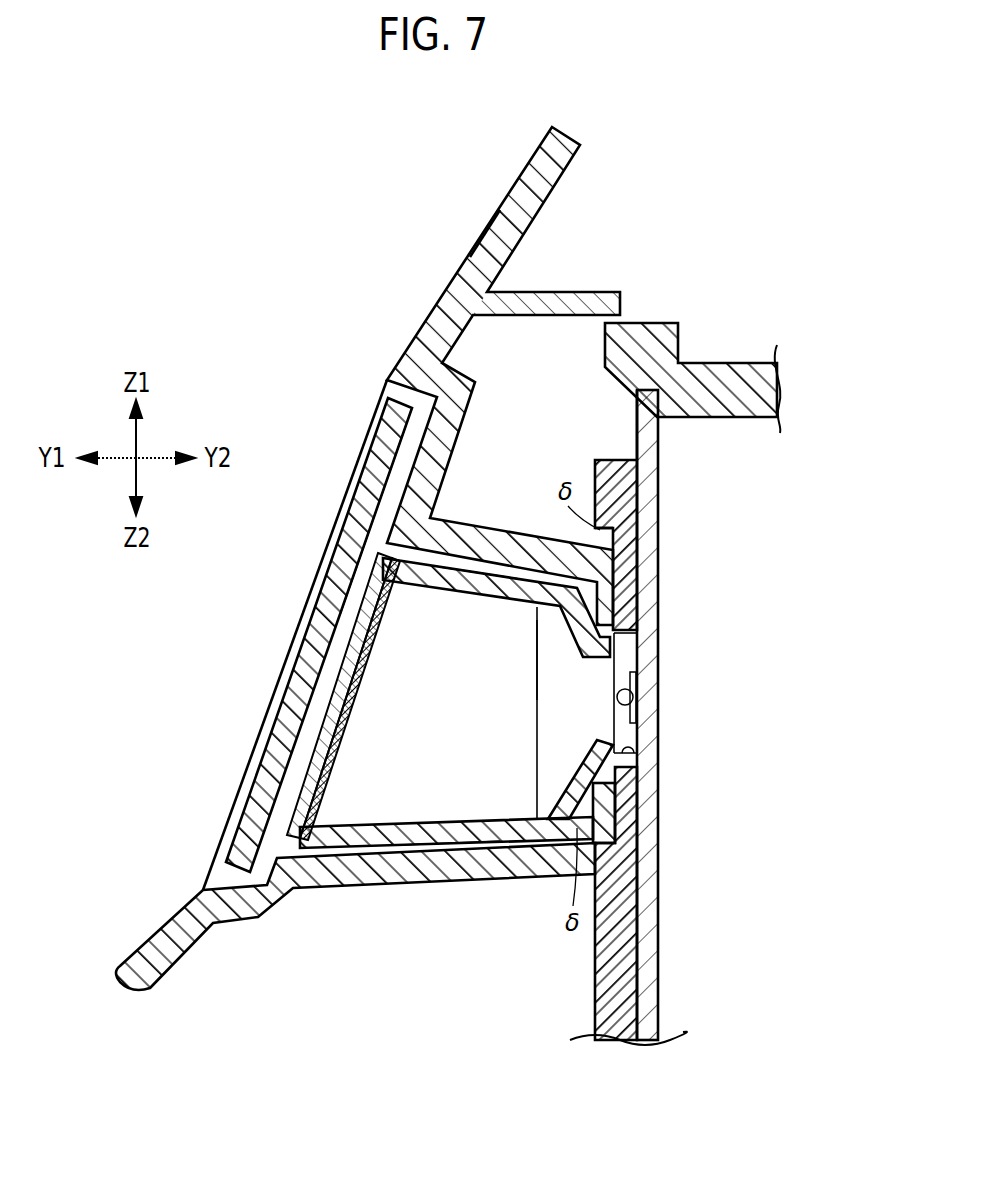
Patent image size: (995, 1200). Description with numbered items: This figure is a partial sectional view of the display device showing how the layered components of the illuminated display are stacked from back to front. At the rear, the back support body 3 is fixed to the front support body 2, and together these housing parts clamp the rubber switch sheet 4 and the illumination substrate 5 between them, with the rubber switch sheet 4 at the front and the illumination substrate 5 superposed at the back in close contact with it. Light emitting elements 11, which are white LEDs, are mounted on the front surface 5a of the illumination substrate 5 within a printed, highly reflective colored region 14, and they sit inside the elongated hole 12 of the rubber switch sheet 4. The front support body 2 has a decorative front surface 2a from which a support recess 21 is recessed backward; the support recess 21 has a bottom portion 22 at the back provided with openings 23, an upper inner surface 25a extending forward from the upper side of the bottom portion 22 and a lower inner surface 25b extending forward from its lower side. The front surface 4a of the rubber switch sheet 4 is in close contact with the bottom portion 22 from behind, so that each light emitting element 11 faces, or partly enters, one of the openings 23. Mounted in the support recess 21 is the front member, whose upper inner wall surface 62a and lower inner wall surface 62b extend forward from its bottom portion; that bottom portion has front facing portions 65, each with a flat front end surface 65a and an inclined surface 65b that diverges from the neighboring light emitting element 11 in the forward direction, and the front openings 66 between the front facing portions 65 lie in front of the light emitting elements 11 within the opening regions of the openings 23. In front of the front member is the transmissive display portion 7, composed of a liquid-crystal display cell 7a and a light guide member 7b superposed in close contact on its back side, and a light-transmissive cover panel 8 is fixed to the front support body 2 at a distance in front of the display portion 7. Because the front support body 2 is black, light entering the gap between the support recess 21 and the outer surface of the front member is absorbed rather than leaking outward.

The front support body 2 is at (572, 150).
The front surface 2a is at (477, 240).
The back support body 3 is at (727, 377).
The rubber switch sheet 4 is at (622, 498).
The front surface 4a is at (615, 532).
The illumination substrate 5 is at (647, 980).
The front surface 5a is at (632, 432).
The display portion 7 is at (365, 785).
The liquid-crystal display cell 7a is at (282, 850).
The light guide member 7b is at (340, 785).
The cover panel 8 is at (257, 773).
The light emitting elements 11 is at (633, 705).
The elongated hole 12 is at (630, 630).
The colored region 14 is at (625, 748).
The support recess 21 is at (387, 543).
The bottom portion 22 is at (630, 825).
The openings 23 is at (628, 650).
The upper inner surface 25a is at (480, 577).
The lower inner surface 25b is at (447, 842).
The upper inner wall surface 62a is at (443, 590).
The lower inner wall surface 62b is at (420, 825).
The front facing portions 65 is at (560, 703).
The flat front end surface 65a is at (523, 822).
The inclined surface 65b is at (545, 662).
The front openings 66 is at (627, 665).